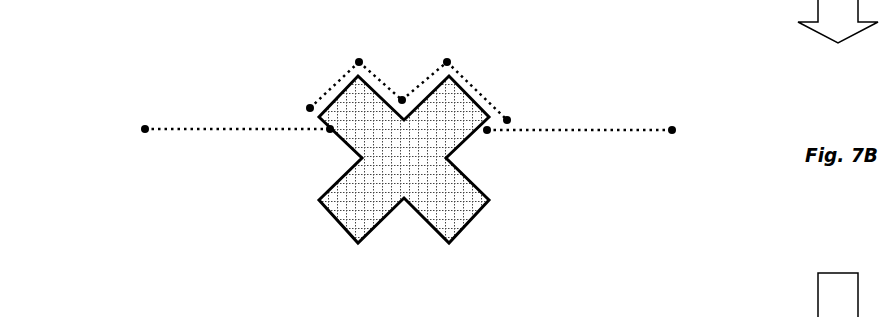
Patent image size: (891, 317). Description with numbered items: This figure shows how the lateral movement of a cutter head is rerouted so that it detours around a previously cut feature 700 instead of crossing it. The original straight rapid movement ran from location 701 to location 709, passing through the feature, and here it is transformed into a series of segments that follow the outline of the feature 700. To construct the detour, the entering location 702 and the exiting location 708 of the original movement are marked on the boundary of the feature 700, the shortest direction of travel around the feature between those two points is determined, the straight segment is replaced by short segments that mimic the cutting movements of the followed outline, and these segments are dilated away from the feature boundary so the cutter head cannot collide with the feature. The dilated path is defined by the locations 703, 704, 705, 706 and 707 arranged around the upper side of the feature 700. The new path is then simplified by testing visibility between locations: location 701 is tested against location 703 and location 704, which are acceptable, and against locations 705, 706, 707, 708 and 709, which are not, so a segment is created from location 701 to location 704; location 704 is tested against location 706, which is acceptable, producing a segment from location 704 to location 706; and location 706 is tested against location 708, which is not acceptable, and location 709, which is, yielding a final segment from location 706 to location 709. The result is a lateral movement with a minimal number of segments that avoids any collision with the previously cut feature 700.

The previously cut feature 700 is at (404, 159).
The location 701 is at (145, 132).
The entering location 702 is at (330, 132).
The location 703 is at (308, 109).
The location 704 is at (359, 60).
The location 705 is at (402, 98).
The location 706 is at (448, 60).
The location 707 is at (509, 118).
The exiting location 708 is at (489, 133).
The location 709 is at (674, 129).